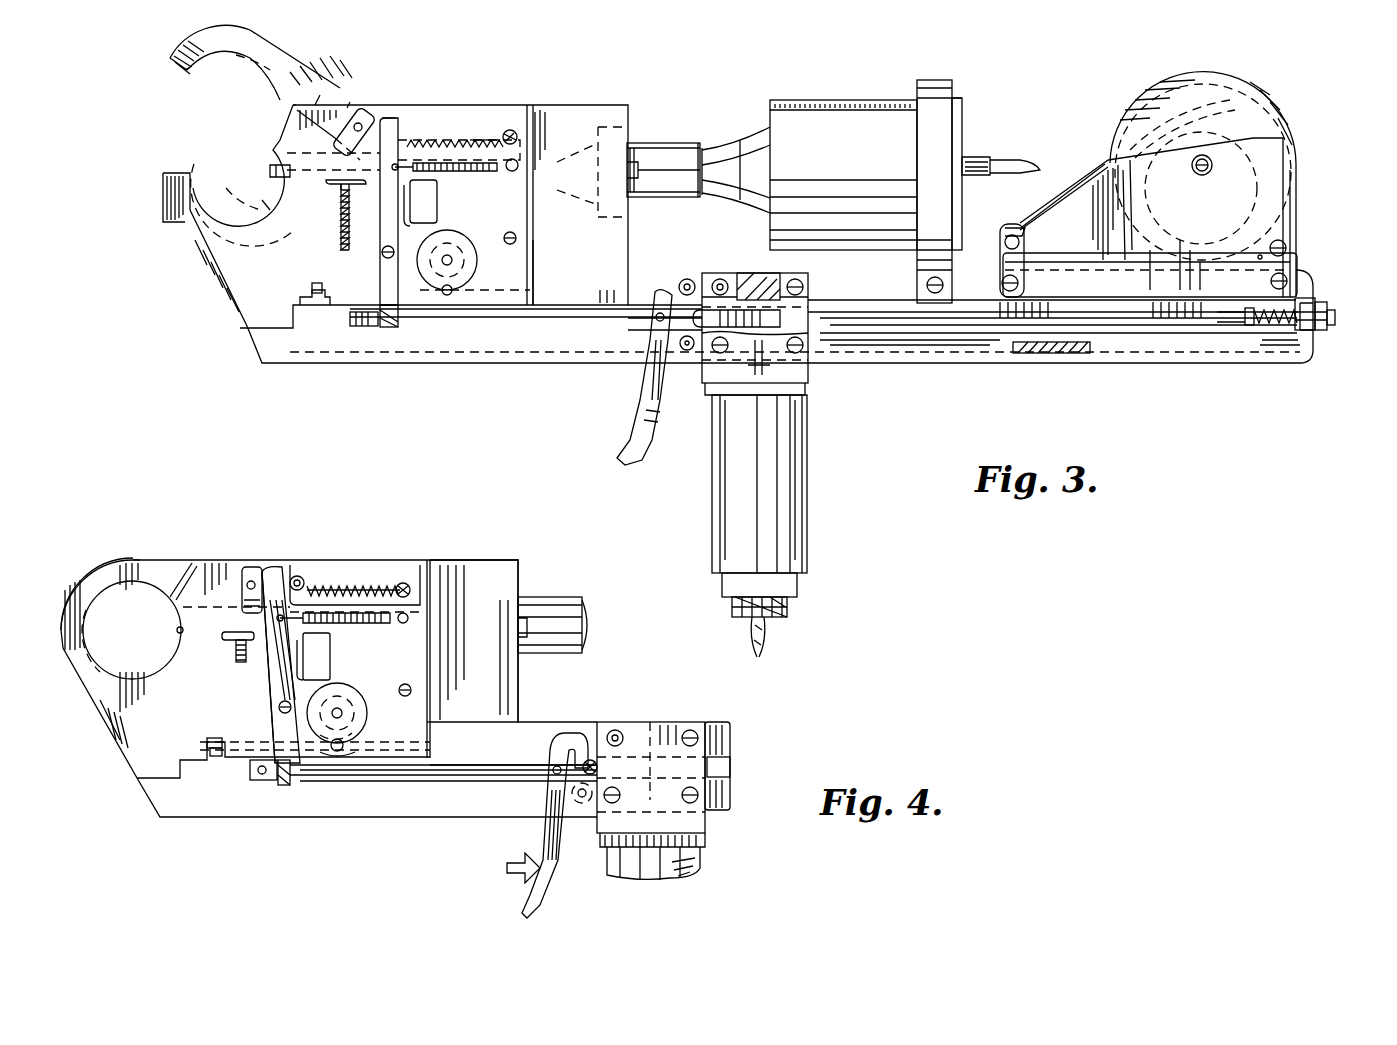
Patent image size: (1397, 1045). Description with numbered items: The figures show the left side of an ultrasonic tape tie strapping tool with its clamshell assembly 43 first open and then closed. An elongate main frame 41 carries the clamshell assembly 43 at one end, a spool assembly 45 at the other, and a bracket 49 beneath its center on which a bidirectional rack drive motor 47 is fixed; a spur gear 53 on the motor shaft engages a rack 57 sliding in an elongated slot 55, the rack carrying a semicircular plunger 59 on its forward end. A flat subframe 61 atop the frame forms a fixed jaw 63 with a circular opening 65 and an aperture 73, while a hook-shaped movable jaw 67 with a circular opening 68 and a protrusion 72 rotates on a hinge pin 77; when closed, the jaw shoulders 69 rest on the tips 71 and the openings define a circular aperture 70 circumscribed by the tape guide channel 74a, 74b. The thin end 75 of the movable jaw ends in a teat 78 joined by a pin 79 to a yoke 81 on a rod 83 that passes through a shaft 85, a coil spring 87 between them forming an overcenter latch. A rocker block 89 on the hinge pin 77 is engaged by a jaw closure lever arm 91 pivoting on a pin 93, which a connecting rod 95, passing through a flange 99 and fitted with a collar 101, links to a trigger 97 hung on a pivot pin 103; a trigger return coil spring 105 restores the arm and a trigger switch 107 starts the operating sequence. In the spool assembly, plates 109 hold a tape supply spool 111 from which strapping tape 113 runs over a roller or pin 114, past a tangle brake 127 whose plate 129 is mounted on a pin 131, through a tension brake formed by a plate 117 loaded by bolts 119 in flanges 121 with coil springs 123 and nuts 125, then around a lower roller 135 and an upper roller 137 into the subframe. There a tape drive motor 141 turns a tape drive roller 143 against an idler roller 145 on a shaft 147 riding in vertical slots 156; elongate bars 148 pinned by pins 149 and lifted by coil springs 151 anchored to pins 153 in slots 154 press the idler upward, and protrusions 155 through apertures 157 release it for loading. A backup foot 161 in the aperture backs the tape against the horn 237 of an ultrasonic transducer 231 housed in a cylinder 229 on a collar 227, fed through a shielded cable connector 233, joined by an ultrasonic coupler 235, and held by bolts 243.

In FIG. 3, the main frame 41 is at (978, 362).
In FIG. 3, the clamshell assembly 43 is at (158, 135).
In FIG. 4, the clamshell assembly 43 is at (60, 567).
In FIG. 3, the spool assembly 45 is at (1306, 95).
In FIG. 3, the rack drive motor 47 is at (805, 465).
In FIG. 4, the rack drive motor 47 is at (700, 862).
In FIG. 3, the bracket 49 is at (812, 378).
In FIG. 4, the bracket 49 is at (660, 730).
In FIG. 3, the spur gear 53 is at (785, 283).
In FIG. 3, the elongated slot 55 is at (1162, 330).
In FIG. 3, the rack 57 is at (1112, 320).
In FIG. 4, the rack 57 is at (730, 748).
In FIG. 3, the semicircular plunger 59 is at (742, 280).
In FIG. 4, the semicircular plunger 59 is at (589, 758).
In FIG. 4, the subframe 61 is at (462, 560).
In FIG. 3, the fixed jaw 63 is at (188, 252).
In FIG. 4, the fixed jaw 63 is at (122, 748).
In FIG. 3, the circular opening 65 is at (262, 206).
In FIG. 3, the movable jaw 67 is at (262, 52).
In FIG. 4, the movable jaw 67 is at (150, 560).
In FIG. 3, the circular opening 68 is at (210, 72).
In FIG. 3, the shoulders 69 is at (318, 100).
In FIG. 4, the shoulders 69 is at (192, 566).
In FIG. 4, the circular aperture 70 is at (145, 641).
In FIG. 3, the tips 71 is at (278, 130).
In FIG. 3, the protrusion 72 is at (175, 68).
In FIG. 3, the aperture 73 is at (163, 175).
In FIG. 3, the tape guide channel 74a is at (232, 60).
In FIG. 3, the tape guide channel 74b is at (228, 185).
In FIG. 3, the thin end 75 is at (350, 105).
In FIG. 3, the hinge pin 77 is at (382, 122).
In FIG. 4, the hinge pin 77 is at (268, 565).
In FIG. 4, the teat 78 is at (302, 578).
In FIG. 4, the pin 79 is at (296, 572).
In FIG. 3, the yoke 81 is at (405, 145).
In FIG. 4, the yoke 81 is at (308, 575).
In FIG. 3, the rod 83 is at (440, 138).
In FIG. 4, the rod 83 is at (360, 582).
In FIG. 3, the shaft 85 is at (512, 130).
In FIG. 4, the shaft 85 is at (405, 580).
In FIG. 3, the coil spring 87 is at (476, 138).
In FIG. 4, the coil spring 87 is at (340, 580).
In FIG. 3, the rocker block 89 is at (356, 115).
In FIG. 4, the rocker block 89 is at (250, 567).
In FIG. 3, the jaw closure lever arm 91 is at (384, 228).
In FIG. 4, the jaw closure lever arm 91 is at (275, 672).
In FIG. 3, the pin 93 is at (380, 255).
In FIG. 4, the pin 93 is at (278, 708).
In FIG. 3, the connecting rod 95 is at (590, 315).
In FIG. 4, the connecting rod 95 is at (478, 782).
In FIG. 3, the trigger 97 is at (632, 425).
In FIG. 4, the trigger 97 is at (548, 905).
In FIG. 3, the flange 99 is at (385, 345).
In FIG. 4, the flange 99 is at (288, 787).
In FIG. 3, the collar 101 is at (365, 345).
In FIG. 4, the collar 101 is at (275, 782).
In FIG. 3, the pivot pin 103 is at (722, 276).
In FIG. 4, the pivot pin 103 is at (615, 728).
In FIG. 3, the trigger return coil spring 105 is at (490, 168).
In FIG. 4, the trigger return coil spring 105 is at (388, 625).
In FIG. 3, the trigger switch 107 is at (440, 196).
In FIG. 4, the trigger switch 107 is at (333, 662).
In FIG. 3, the plates 109 is at (1005, 258).
In FIG. 3, the tape supply spool 111 is at (1225, 72).
In FIG. 3, the strapping tape 113 is at (1098, 163).
In FIG. 3, the roller or pin 114 is at (1012, 225).
In FIG. 3, the plate 117 is at (1318, 325).
In FIG. 3, the bolt 119 is at (1338, 314).
In FIG. 3, the flange 121 is at (1290, 355).
In FIG. 3, the coil springs 123 is at (1255, 335).
In FIG. 3, the nuts 125 is at (1248, 335).
In FIG. 3, the tangle brake 127 is at (1312, 216).
In FIG. 3, the plate 129 is at (1300, 175).
In FIG. 3, the pin 131 is at (1290, 250).
In FIG. 3, the lower roller 135 is at (686, 353).
In FIG. 3, the upper roller 137 is at (687, 277).
In FIG. 3, the tape drive motor 141 is at (462, 240).
In FIG. 4, the tape drive motor 141 is at (368, 713).
In FIG. 3, the tape drive roller 143 is at (470, 262).
In FIG. 3, the idler roller 145 is at (455, 300).
In FIG. 4, the idler roller 145 is at (360, 737).
In FIG. 4, the shaft 147 is at (350, 760).
In FIG. 3, the elongate bars 148 is at (418, 320).
In FIG. 4, the elongate bars 148 is at (410, 765).
In FIG. 3, the pins 149 is at (535, 275).
In FIG. 4, the pins 149 is at (428, 750).
In FIG. 3, the coil springs 151 is at (349, 205).
In FIG. 4, the coil springs 151 is at (238, 650).
In FIG. 3, the pins 153 is at (342, 188).
In FIG. 3, the slots 154 is at (335, 180).
In FIG. 3, the protrusions 155 is at (310, 298).
In FIG. 4, the protrusions 155 is at (210, 752).
In FIG. 3, the vertical slots 156 is at (445, 295).
In FIG. 4, the vertical slots 156 is at (336, 752).
In FIG. 3, the apertures 157 is at (310, 285).
In FIG. 3, the backup foot 161 is at (274, 172).
In FIG. 3, the collar 227 is at (935, 80).
In FIG. 3, the cylinder 229 is at (830, 100).
In FIG. 3, the ultrasonic transducer 231 is at (754, 120).
In FIG. 3, the shielded cable connector 233 is at (995, 150).
In FIG. 3, the ultrasonic coupler 235 is at (722, 146).
In FIG. 3, the horn 237 is at (648, 143).
In FIG. 4, the horn 237 is at (553, 597).
In FIG. 3, the bolts 243 is at (640, 175).